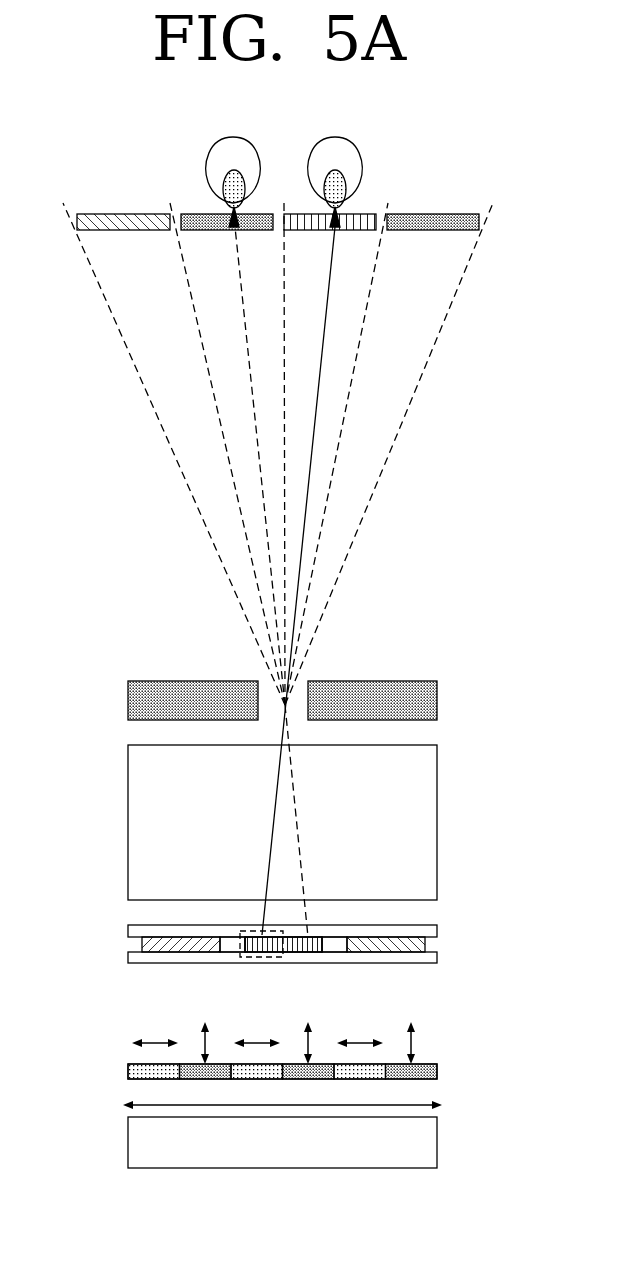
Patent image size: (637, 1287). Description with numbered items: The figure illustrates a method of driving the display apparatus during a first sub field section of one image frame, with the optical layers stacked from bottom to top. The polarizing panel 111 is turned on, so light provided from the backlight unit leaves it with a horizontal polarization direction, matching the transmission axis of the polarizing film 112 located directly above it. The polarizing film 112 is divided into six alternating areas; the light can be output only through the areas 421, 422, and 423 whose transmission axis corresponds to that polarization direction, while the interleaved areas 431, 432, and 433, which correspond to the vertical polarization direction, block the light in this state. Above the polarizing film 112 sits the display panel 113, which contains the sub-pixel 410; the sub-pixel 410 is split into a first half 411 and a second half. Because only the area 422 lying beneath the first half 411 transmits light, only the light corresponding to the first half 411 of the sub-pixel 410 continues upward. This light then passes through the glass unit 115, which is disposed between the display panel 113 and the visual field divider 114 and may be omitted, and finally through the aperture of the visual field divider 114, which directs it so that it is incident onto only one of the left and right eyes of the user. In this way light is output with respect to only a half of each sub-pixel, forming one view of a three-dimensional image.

The polarizing panel 111 is at (128, 1143).
The polarizing film 112 is at (128, 1070).
The display panel 113 is at (128, 928).
The visual field divider 114 is at (128, 698).
The glass unit 115 is at (128, 822).
The sub-pixel 410 is at (308, 952).
The first half of a sub-pixel 411 is at (243, 957).
The area of the polarizing film 421 is at (153, 1079).
The area of the polarizing film 431 is at (204, 1079).
The area of the polarizing film 422 is at (254, 1079).
The area of the polarizing film 432 is at (305, 1079).
The area of the polarizing film 423 is at (355, 1079).
The area of the polarizing film 433 is at (407, 1079).